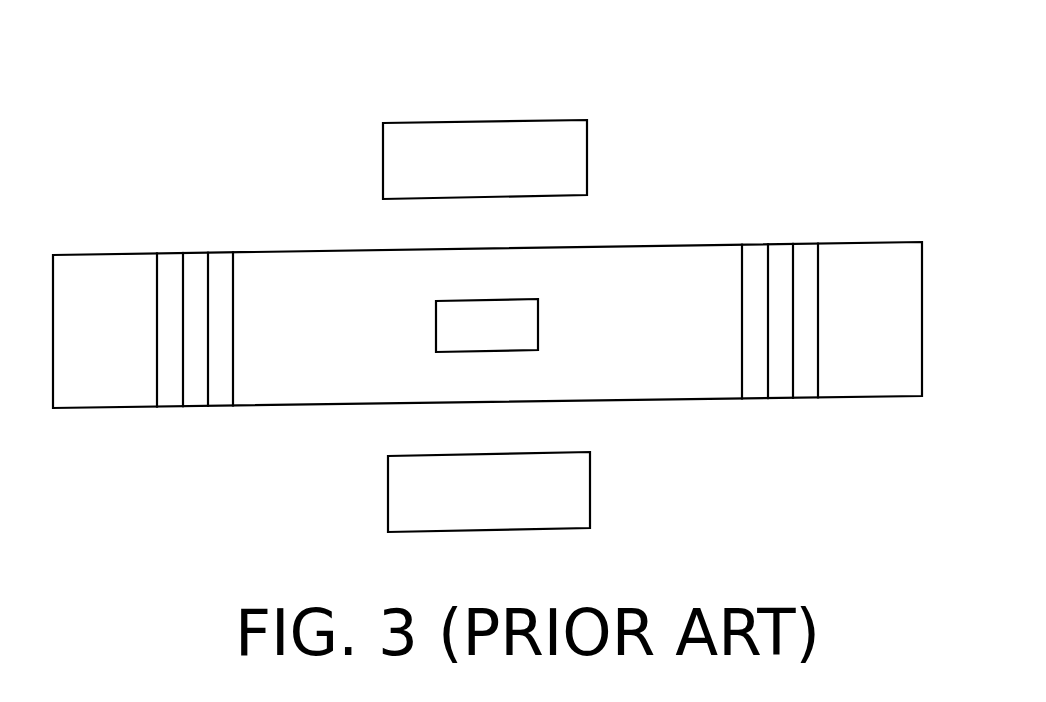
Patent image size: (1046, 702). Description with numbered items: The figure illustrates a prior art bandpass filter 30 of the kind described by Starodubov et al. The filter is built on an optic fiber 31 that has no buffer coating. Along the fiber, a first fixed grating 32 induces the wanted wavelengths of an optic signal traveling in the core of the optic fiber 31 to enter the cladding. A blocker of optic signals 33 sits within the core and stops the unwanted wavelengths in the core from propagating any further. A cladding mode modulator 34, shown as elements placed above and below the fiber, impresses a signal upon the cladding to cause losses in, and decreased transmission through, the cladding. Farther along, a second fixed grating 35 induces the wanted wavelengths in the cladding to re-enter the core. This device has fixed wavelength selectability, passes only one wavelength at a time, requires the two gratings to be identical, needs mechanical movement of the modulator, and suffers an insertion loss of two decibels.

The bandpass filter 30 is at (674, 81).
The optic fiber 31 is at (282, 252).
The first fixed grating 32 is at (183, 253).
The blocker of optic signals 33 is at (538, 323).
The cladding mode modulator 34 is at (587, 169).
The second fixed grating 35 is at (768, 244).